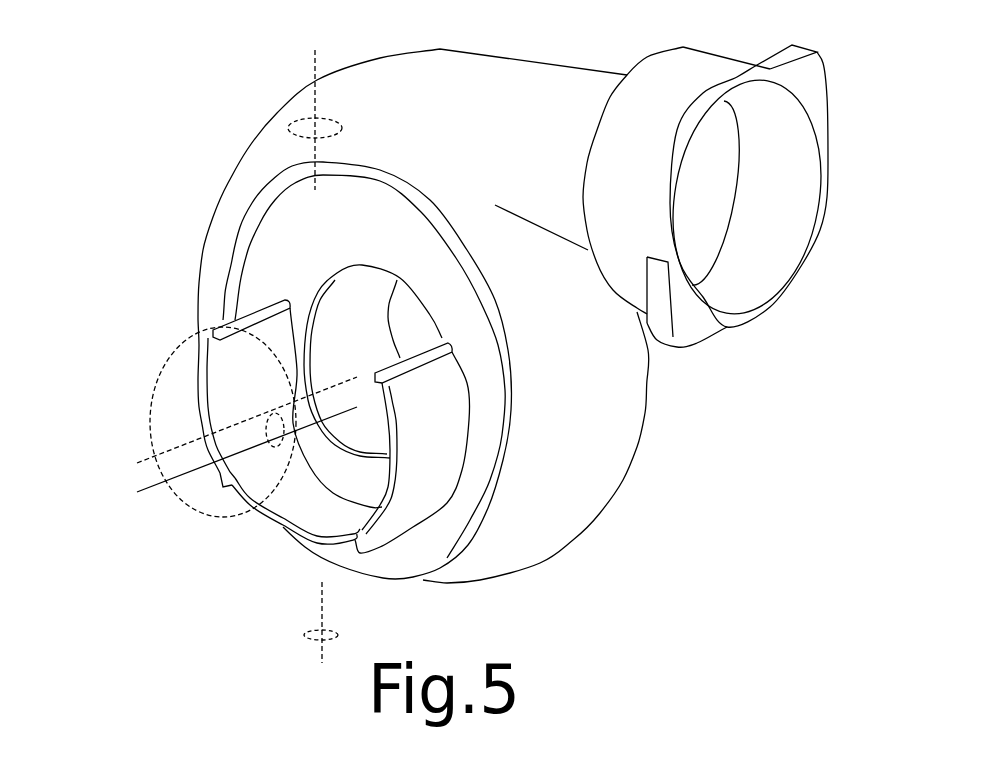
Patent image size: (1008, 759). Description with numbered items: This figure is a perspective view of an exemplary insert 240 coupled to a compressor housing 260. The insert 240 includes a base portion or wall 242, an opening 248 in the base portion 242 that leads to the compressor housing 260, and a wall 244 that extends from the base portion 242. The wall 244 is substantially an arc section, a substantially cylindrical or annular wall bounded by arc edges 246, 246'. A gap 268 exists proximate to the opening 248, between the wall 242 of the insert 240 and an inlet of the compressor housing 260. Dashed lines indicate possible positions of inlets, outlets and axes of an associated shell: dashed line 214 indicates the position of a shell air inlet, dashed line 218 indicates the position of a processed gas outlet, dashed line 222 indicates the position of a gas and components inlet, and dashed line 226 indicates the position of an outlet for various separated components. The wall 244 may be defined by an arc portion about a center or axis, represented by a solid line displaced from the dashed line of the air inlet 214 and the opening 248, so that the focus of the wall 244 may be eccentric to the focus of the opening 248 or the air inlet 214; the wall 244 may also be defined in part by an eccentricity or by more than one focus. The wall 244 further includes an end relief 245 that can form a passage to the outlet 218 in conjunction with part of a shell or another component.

The dashed line (shell air inlet position) 214 is at (180, 333).
The dashed line (processed gas outlet position) 218 is at (277, 450).
The dashed line (gas and components inlet position) 222 is at (292, 127).
The dashed line (separated components outlet position) 226 is at (307, 638).
The insert 240 is at (277, 243).
The base portion or wall 242 is at (377, 248).
The wall 244 is at (449, 414).
The end relief 245 is at (287, 531).
The arc edge 246 is at (261, 310).
The arc edge 246' is at (433, 346).
The opening 248 is at (316, 387).
The compressor housing 260 is at (433, 50).
The gap 268 is at (327, 306).